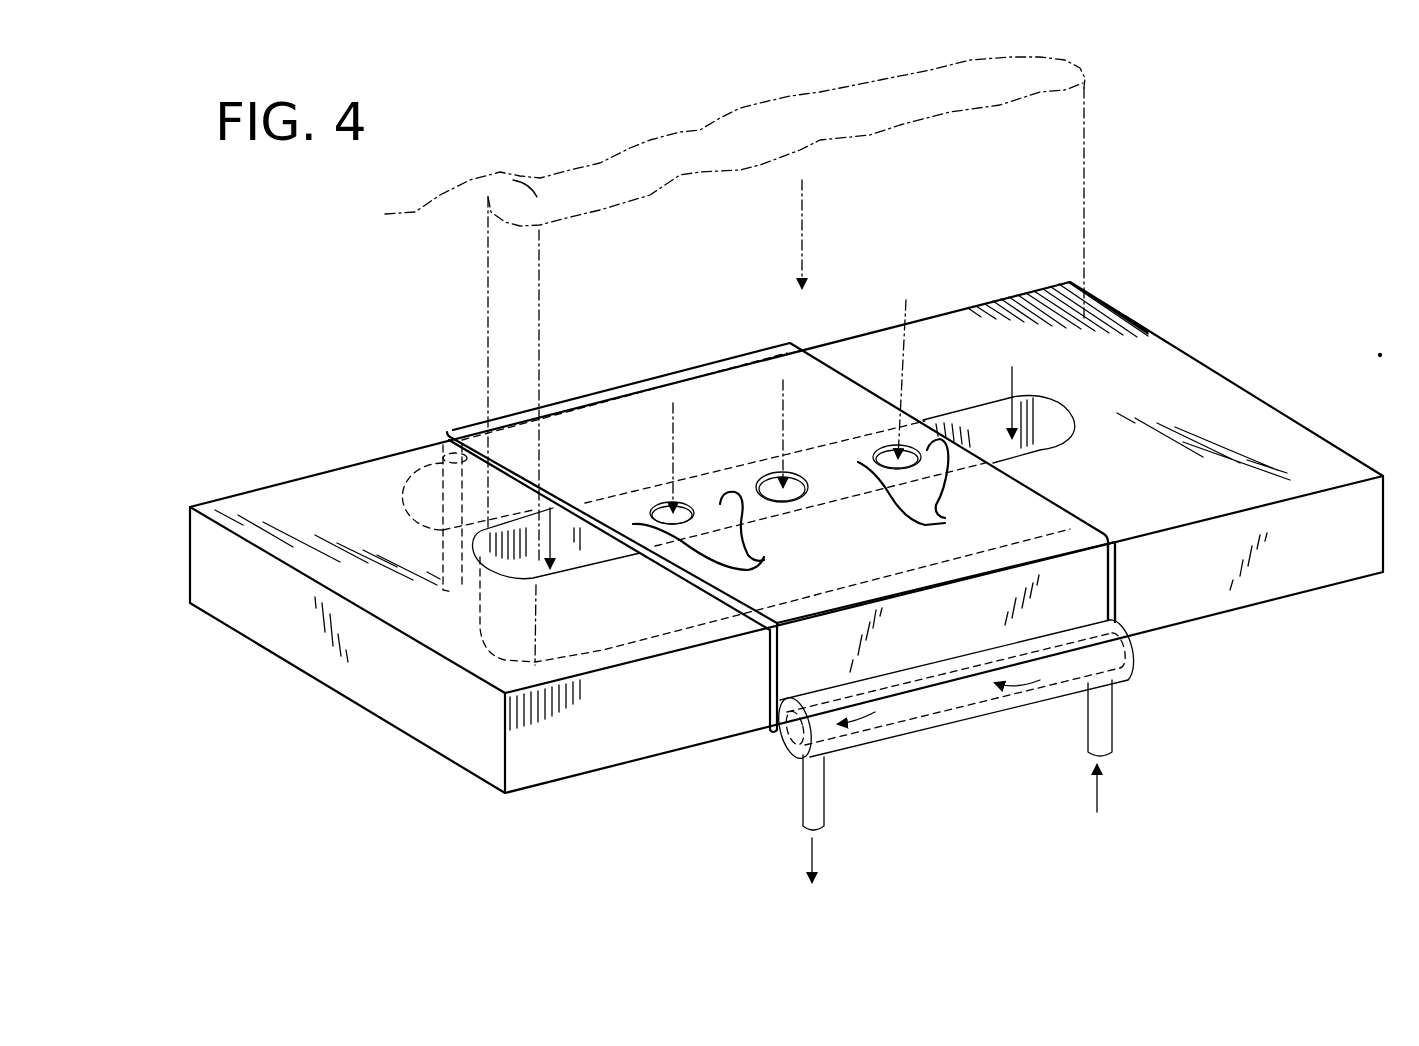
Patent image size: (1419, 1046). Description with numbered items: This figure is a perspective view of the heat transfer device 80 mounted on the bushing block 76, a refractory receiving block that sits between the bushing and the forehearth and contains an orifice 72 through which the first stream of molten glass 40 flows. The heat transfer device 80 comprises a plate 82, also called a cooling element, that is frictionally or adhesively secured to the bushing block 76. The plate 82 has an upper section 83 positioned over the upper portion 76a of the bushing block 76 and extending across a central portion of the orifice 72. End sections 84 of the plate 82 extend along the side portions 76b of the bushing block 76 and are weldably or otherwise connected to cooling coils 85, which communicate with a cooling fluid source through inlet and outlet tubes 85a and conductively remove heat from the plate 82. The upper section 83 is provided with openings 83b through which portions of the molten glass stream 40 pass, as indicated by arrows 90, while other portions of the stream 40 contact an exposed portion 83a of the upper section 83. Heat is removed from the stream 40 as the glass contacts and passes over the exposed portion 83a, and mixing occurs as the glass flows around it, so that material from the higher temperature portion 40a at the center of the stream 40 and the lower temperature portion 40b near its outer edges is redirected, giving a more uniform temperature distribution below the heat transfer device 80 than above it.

The first stream of molten glass 40 is at (1043, 200).
The higher temperature portion 40a is at (758, 135).
The lower temperature portion 40b is at (1153, 68).
The orifice 72 is at (1056, 424).
The bushing block 76 is at (320, 657).
The upper portion 76a is at (328, 503).
The side portions 76b is at (550, 753).
The heat transfer device 80 is at (1130, 655).
The plate 82 is at (1090, 571).
The upper section 83 is at (1018, 500).
The exposed portion 83a is at (819, 508).
The openings 83b is at (683, 503).
The end sections 84 is at (440, 463).
The cooling coils 85 is at (408, 492).
The inlet and outlet tubes 85a is at (817, 797).
The arrows 90 is at (673, 420).